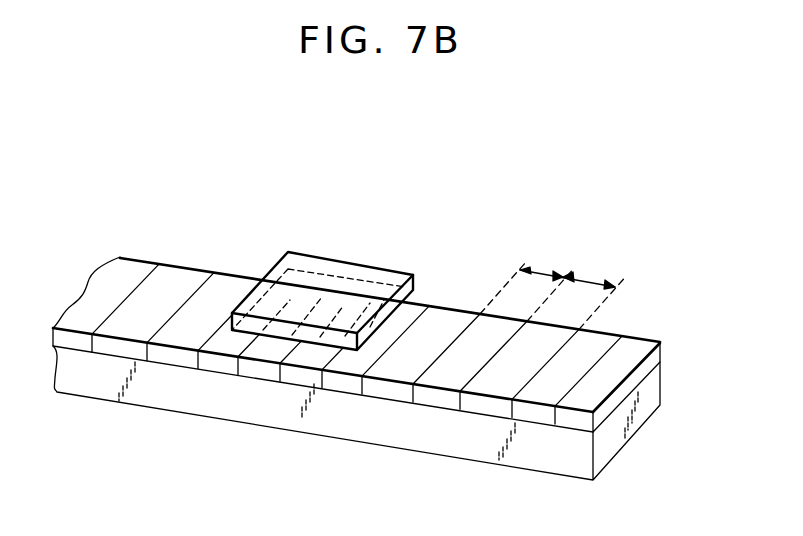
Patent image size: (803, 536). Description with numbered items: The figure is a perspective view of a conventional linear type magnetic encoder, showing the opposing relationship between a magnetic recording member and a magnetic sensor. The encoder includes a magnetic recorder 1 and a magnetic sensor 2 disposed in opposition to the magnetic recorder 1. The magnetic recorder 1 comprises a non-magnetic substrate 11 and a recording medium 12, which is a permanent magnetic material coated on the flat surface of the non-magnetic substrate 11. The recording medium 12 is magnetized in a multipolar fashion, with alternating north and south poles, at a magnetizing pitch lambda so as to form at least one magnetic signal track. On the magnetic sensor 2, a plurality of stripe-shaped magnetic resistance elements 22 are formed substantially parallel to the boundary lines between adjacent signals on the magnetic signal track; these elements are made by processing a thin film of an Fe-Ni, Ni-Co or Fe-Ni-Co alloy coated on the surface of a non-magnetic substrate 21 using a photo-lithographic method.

The magnetic recorder 1 is at (400, 364).
The non-magnetic substrate 11 is at (647, 390).
The recording medium 12 is at (664, 350).
The magnetic sensor 2 is at (345, 271).
The non-magnetic substrate 21 is at (372, 277).
The magnetic resistance elements 22 is at (321, 293).